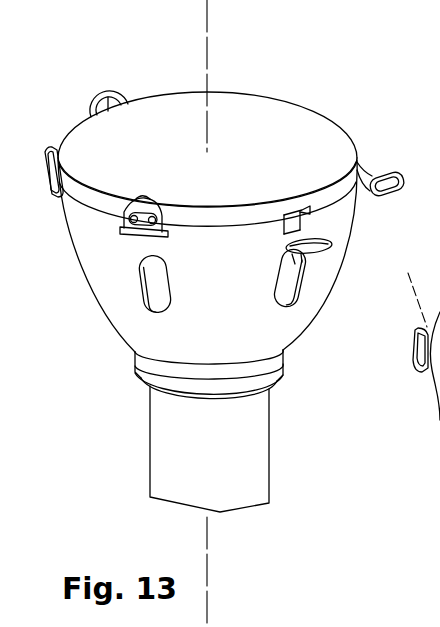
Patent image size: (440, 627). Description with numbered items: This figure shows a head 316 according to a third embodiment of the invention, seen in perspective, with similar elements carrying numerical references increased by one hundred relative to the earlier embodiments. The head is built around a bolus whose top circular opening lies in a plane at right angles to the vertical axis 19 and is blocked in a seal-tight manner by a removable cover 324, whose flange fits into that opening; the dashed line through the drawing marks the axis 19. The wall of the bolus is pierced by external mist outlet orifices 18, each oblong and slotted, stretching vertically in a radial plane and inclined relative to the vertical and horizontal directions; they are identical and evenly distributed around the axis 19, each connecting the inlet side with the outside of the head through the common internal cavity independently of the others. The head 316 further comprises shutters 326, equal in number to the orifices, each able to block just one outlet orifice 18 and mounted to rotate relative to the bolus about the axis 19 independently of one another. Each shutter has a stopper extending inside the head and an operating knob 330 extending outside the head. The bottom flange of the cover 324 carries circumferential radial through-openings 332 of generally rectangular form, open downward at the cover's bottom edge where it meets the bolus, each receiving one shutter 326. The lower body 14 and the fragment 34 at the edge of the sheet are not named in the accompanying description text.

The stem / shaft 14 is at (150, 478).
The outlet orifice 18 is at (140, 289).
The axis 19 is at (207, 53).
The head 316 is at (351, 124).
The cover 324 is at (259, 120).
The shutter 326 is at (105, 96).
The operating knob 330 is at (46, 165).
The through-opening 332 is at (300, 212).
The adjacent figure element 34 is at (418, 300).